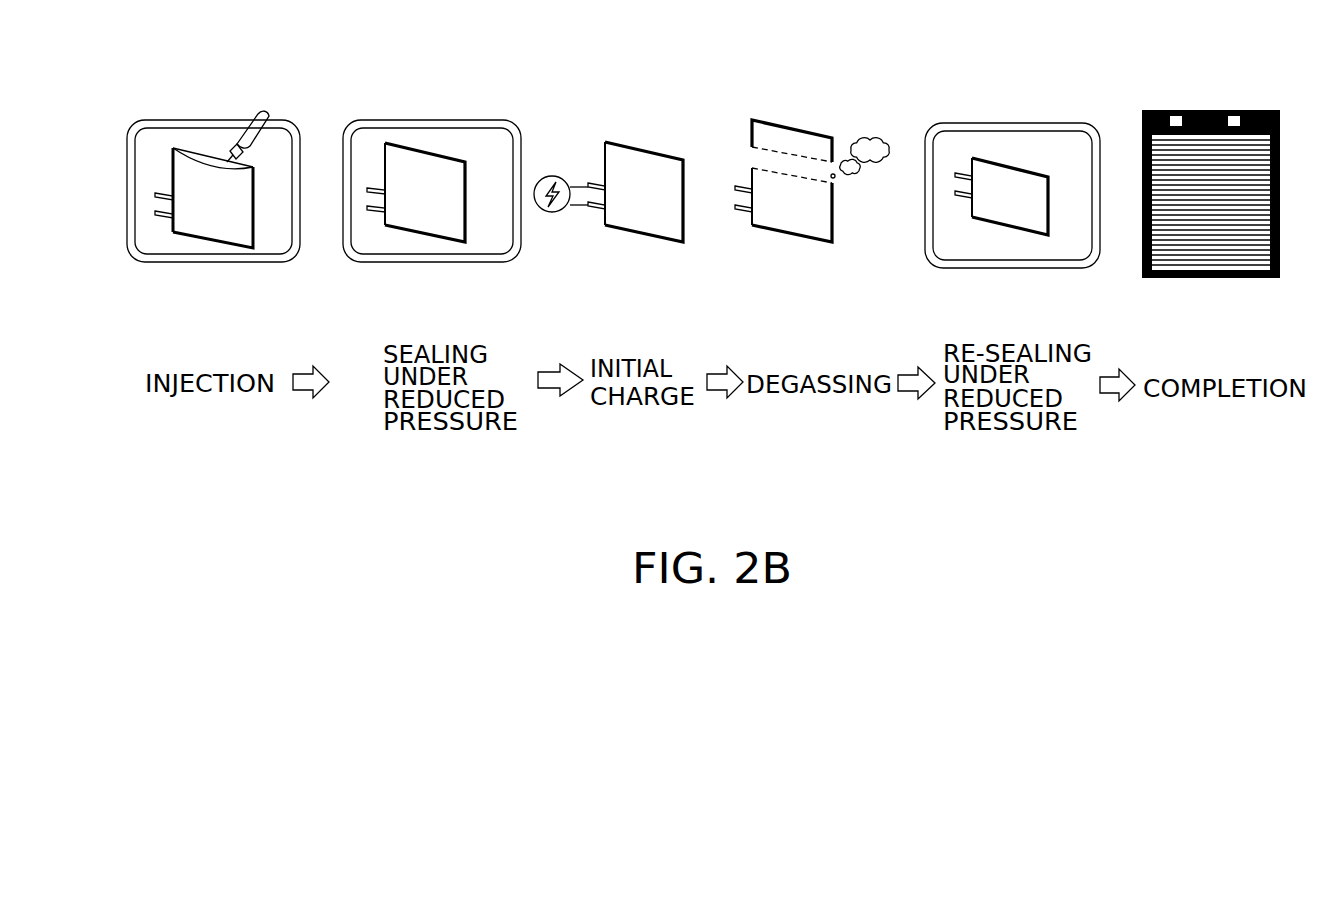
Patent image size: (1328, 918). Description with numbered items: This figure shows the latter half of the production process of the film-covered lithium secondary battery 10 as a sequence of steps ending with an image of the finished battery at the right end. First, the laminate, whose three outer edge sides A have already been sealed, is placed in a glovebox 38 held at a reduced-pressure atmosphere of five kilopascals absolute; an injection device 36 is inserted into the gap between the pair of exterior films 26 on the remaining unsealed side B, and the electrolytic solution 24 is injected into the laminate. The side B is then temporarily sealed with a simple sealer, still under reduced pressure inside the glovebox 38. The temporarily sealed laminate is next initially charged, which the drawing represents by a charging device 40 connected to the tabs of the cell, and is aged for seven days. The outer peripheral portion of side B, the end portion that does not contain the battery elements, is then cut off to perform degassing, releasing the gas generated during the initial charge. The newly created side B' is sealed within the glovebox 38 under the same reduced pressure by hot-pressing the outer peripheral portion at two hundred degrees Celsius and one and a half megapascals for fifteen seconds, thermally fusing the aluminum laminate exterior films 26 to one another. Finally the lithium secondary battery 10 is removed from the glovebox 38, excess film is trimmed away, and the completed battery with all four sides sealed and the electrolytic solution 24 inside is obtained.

The lithium secondary battery 10 is at (1008, 185).
The electrolytic solution 24 is at (222, 158).
The exterior films 26 is at (232, 190).
The injection device 36 is at (257, 114).
The glovebox 38 is at (255, 262).
The charger 40 is at (552, 212).
The three outer edge sides A is at (158, 203).
The remaining one side B is at (476, 106).
The side generated by cutting off the temporary sealing B' is at (862, 112).